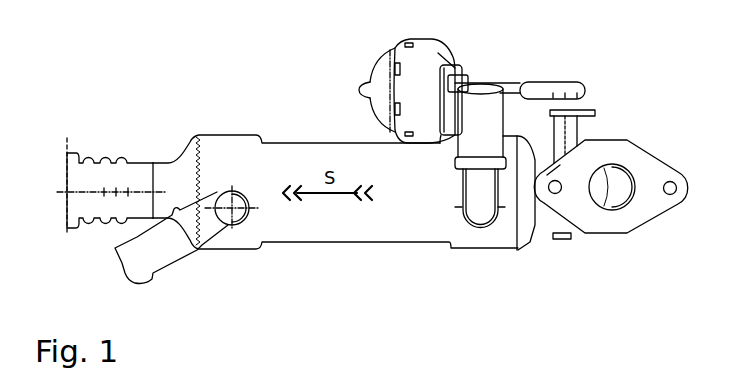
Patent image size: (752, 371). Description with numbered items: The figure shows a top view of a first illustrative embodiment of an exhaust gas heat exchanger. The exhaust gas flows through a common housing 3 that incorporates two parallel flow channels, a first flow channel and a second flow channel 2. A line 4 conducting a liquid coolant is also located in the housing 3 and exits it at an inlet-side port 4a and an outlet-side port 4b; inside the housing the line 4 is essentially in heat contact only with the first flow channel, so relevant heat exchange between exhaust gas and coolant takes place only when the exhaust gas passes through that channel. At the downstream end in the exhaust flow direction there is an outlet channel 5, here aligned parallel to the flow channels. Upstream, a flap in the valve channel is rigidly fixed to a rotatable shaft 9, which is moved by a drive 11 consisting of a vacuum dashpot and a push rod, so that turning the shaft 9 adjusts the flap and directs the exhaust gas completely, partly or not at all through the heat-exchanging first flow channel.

The second flow channel 2 is at (314, 369).
The housing 3 is at (243, 136).
The line 4 is at (104, 276).
The inlet-side port 4a is at (147, 257).
The outlet-side port 4b is at (480, 157).
The outlet channel 5 is at (88, 175).
The shaft 9 is at (568, 248).
The drive 11 is at (363, 172).